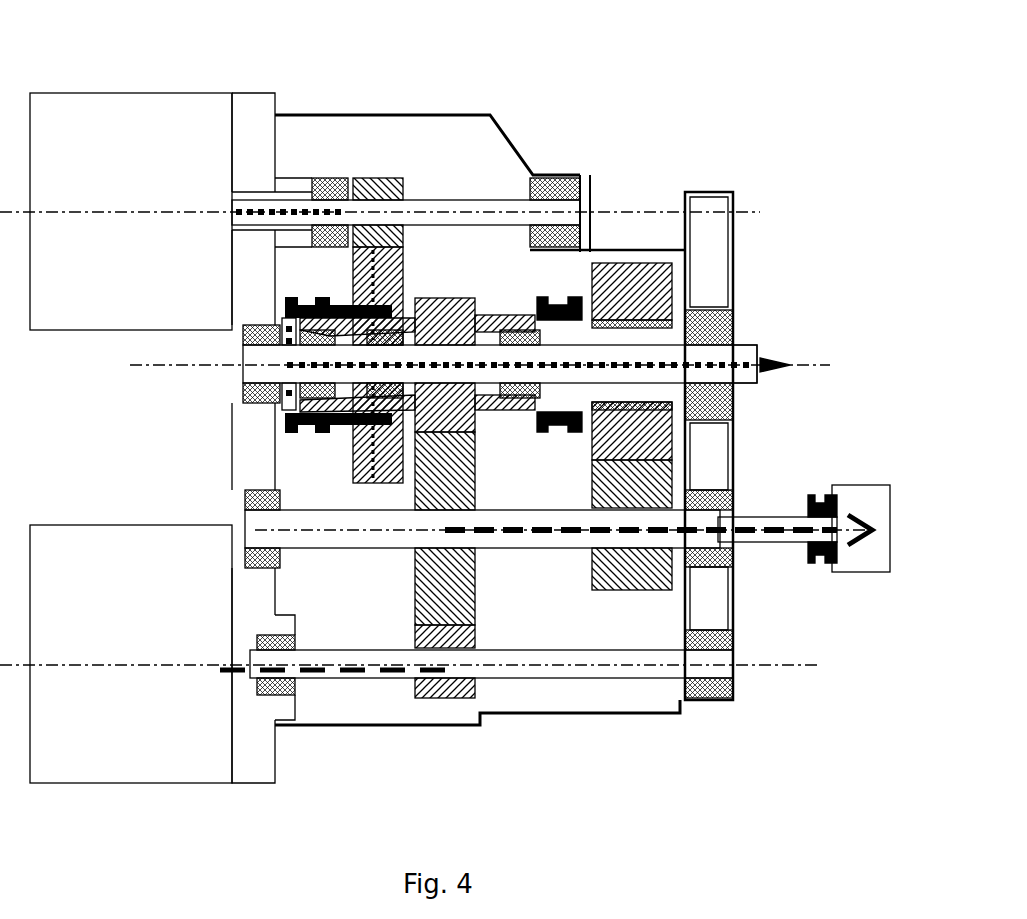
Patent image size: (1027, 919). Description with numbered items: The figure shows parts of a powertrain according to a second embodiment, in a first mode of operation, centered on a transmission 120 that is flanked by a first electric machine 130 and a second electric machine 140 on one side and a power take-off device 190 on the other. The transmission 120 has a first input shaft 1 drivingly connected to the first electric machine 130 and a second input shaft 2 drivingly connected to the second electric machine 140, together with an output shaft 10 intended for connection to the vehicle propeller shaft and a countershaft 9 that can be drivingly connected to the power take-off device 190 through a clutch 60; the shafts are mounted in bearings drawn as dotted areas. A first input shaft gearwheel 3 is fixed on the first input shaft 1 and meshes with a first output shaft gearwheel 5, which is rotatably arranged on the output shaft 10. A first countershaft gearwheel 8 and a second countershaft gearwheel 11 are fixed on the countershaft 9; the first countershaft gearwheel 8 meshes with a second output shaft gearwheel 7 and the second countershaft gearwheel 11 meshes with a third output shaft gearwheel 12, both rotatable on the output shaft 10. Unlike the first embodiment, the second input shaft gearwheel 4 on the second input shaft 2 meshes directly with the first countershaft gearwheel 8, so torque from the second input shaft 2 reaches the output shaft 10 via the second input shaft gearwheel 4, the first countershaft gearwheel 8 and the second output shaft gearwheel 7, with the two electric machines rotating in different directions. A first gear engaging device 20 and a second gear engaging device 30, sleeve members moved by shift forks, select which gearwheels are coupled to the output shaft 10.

The first input shaft 1 is at (512, 210).
The second input shaft 2 is at (566, 672).
The first input shaft gearwheel 3 is at (385, 178).
The second input shaft gearwheel 4 is at (449, 686).
The first output shaft gearwheel 5 is at (374, 478).
The second output shaft gearwheel 7 is at (440, 298).
The first countershaft gearwheel 8 is at (413, 612).
The countershaft 9 is at (316, 520).
The output shaft 10 is at (583, 357).
The second countershaft gearwheel 11 is at (608, 593).
The third output shaft gearwheel 12 is at (642, 277).
The first gear engaging device 20 is at (285, 420).
The second gear engaging device 30 is at (557, 300).
The clutch 60 is at (812, 493).
The transmission 120 is at (643, 122).
The first electric machine 130 is at (162, 184).
The second electric machine 140 is at (162, 617).
The power take-off device 190 is at (850, 487).